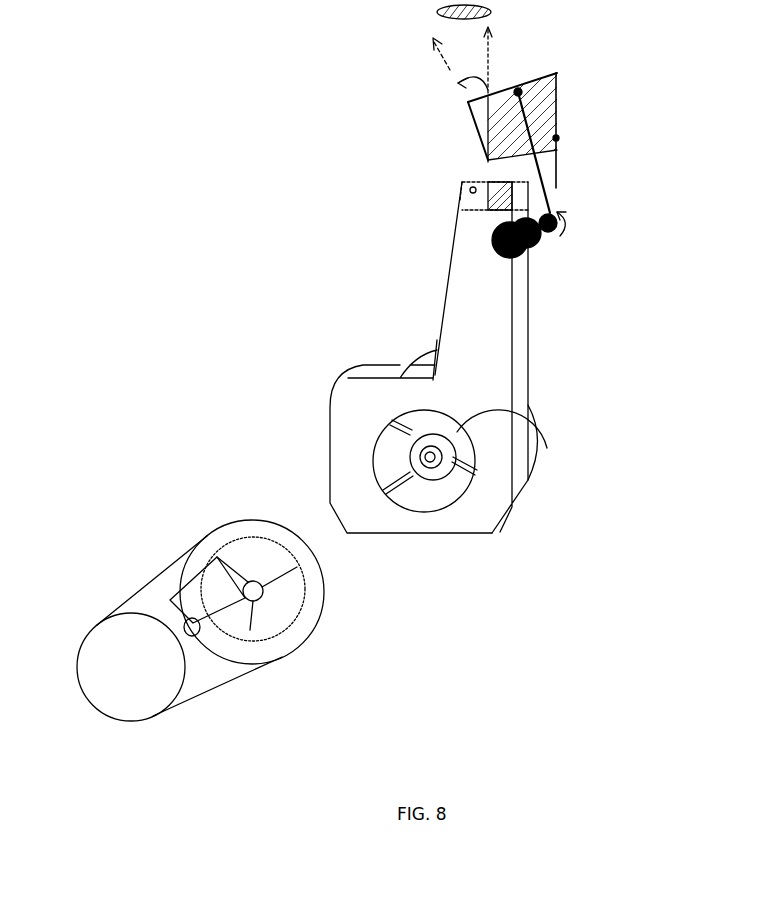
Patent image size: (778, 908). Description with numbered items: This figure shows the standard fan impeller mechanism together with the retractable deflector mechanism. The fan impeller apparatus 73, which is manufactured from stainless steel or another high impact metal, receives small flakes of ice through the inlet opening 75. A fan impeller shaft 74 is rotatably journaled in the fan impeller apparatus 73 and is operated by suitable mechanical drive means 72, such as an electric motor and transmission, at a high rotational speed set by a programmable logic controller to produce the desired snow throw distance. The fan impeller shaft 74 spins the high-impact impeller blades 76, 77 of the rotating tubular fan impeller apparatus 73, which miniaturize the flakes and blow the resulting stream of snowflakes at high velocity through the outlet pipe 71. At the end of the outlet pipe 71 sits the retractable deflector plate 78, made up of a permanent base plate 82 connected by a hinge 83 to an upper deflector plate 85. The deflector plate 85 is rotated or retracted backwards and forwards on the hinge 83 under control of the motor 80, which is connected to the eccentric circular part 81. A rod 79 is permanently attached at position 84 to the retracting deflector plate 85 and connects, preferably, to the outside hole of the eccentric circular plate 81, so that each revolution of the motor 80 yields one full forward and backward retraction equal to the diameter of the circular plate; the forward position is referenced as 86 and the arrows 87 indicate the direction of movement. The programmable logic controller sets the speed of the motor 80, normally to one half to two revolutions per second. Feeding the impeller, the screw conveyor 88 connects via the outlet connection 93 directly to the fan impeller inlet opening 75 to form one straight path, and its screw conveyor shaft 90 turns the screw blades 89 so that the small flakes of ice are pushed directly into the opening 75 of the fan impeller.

The outlet pipe 71 is at (522, 322).
The mechanical drive means 72 is at (535, 445).
The fan impeller apparatus 73 is at (533, 407).
The fan impeller shaft 74 is at (410, 447).
The inlet opening 75 is at (394, 468).
The impeller blade 76 is at (392, 435).
The impeller blade 77 is at (455, 440).
The retractable deflector plate 78 is at (470, 190).
The rod 79 is at (553, 170).
The motor 80 is at (540, 242).
The eccentric circular part 81 is at (572, 222).
The permanent base plate 82 is at (553, 153).
The hinge 83 is at (485, 157).
The connection position 84 is at (557, 73).
The upper deflector plate 85 is at (557, 110).
The forward position 86 is at (470, 103).
The arrows 87 is at (430, 40).
The screw conveyor 88 is at (157, 583).
The screw blades 89 is at (200, 590).
The screw conveyor shaft 90 is at (203, 643).
The outlet connection 93 is at (290, 597).